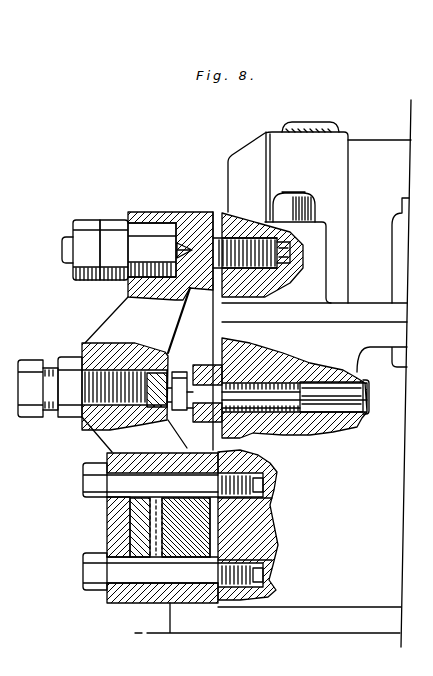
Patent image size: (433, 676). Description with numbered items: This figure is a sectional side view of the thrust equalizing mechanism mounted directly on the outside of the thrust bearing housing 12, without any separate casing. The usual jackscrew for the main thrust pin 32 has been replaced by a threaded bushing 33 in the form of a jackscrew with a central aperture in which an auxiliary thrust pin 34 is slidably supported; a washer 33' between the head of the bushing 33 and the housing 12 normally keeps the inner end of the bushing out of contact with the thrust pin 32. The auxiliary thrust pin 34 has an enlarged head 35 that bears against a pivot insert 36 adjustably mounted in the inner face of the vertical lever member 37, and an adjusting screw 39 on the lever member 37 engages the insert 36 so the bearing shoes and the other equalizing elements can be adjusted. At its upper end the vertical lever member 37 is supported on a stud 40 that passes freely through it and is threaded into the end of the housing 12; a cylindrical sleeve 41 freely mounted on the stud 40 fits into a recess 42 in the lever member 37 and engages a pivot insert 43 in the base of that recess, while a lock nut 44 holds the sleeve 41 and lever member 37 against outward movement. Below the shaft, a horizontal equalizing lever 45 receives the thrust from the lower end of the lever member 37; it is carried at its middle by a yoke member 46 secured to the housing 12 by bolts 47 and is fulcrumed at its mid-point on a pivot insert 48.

The thrust bearing housing 12 is at (246, 157).
The main thrust pin 32 is at (360, 393).
The threaded bushing 33 is at (309, 420).
The washer 33' is at (201, 403).
The auxiliary thrust pin 34 is at (262, 392).
The enlarged head 35 is at (180, 372).
The pivot insert 36 is at (157, 360).
The vertical lever member 37 is at (112, 313).
The adjusting screw 39 is at (82, 419).
The stud 40 is at (231, 299).
The cylindrical sleeve 41 is at (131, 223).
The recess 42 is at (153, 225).
The pivot insert 43 is at (186, 243).
The lock nut 44 is at (110, 225).
The horizontal equalizing lever 45 is at (268, 538).
The yoke member 46 is at (107, 519).
The bolt 47 is at (92, 481).
The pivot insert 48 is at (157, 539).